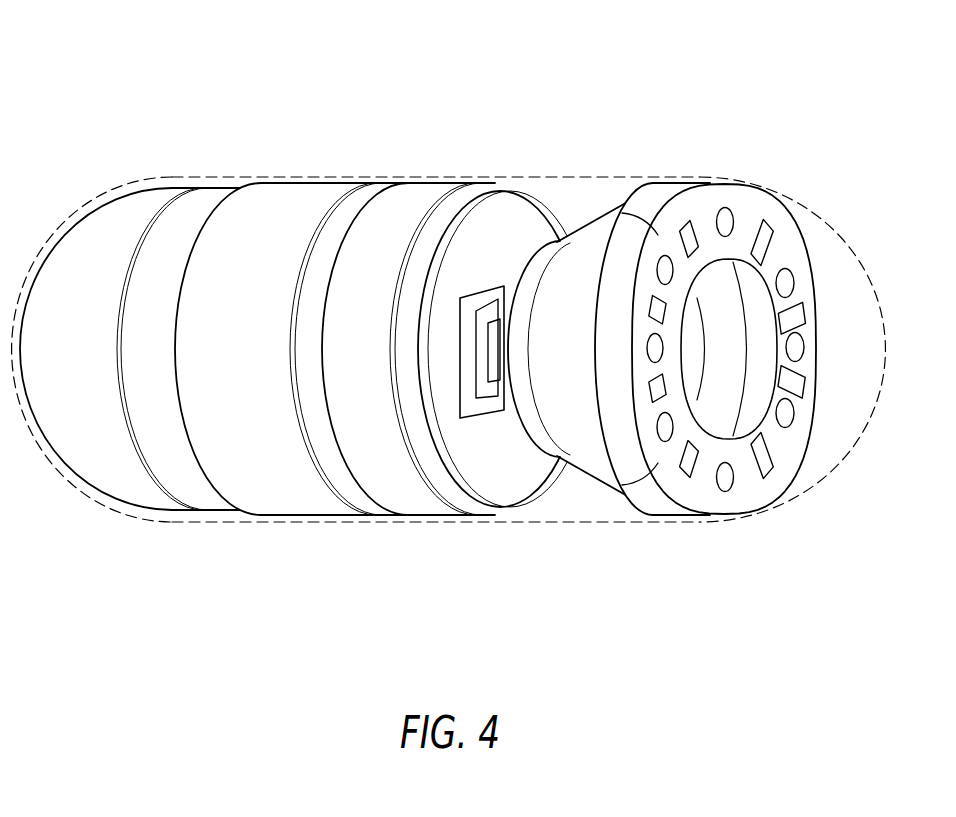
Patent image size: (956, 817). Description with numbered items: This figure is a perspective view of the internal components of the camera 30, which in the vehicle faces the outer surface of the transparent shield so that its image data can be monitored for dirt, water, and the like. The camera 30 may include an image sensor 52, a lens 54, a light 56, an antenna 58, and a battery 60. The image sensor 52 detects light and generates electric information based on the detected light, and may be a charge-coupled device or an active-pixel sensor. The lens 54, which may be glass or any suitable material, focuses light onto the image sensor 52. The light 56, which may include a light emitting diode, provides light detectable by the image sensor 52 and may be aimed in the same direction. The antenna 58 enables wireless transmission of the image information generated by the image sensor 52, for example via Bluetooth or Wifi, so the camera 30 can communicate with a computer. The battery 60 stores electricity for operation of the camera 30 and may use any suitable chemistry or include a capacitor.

The camera 30 is at (302, 92).
The image sensor 52 is at (497, 388).
The lens 54 is at (621, 412).
The light 56 is at (735, 474).
The antenna 58 is at (111, 473).
The battery 60 is at (283, 492).